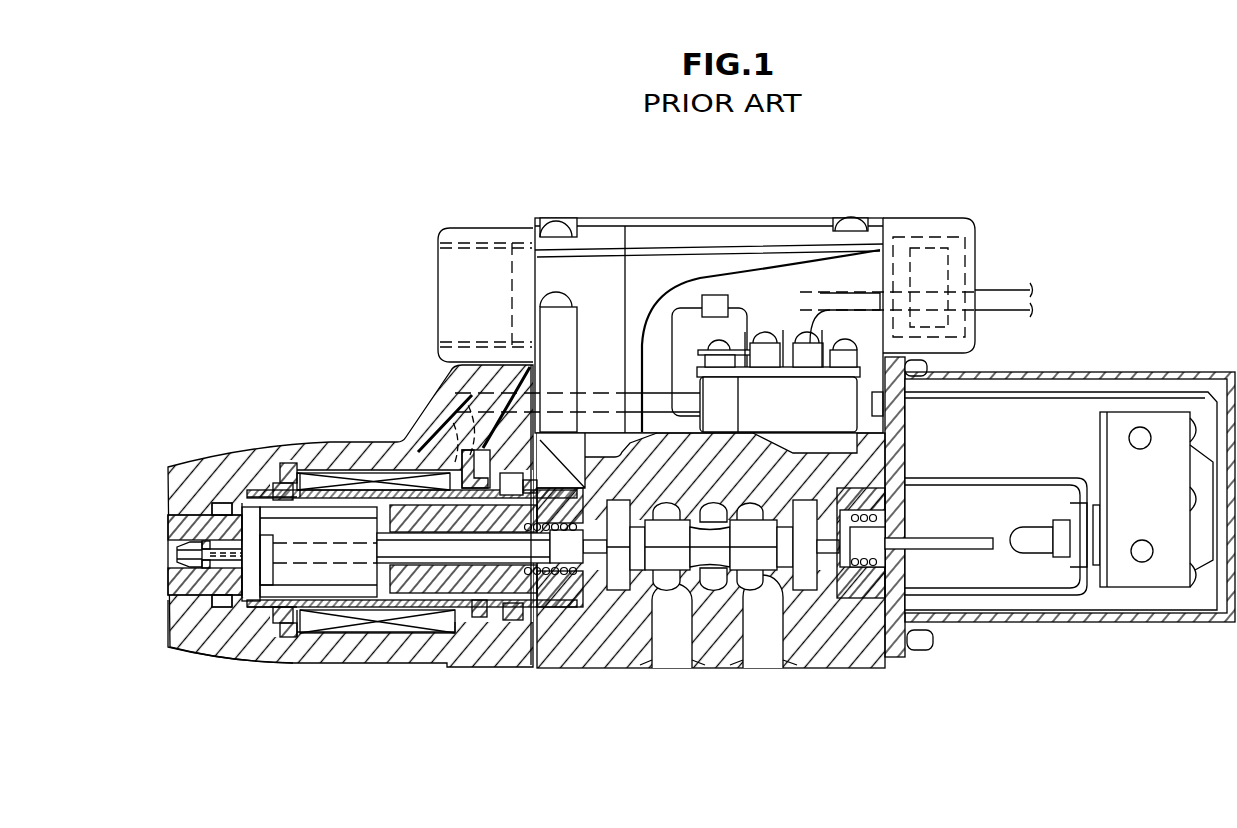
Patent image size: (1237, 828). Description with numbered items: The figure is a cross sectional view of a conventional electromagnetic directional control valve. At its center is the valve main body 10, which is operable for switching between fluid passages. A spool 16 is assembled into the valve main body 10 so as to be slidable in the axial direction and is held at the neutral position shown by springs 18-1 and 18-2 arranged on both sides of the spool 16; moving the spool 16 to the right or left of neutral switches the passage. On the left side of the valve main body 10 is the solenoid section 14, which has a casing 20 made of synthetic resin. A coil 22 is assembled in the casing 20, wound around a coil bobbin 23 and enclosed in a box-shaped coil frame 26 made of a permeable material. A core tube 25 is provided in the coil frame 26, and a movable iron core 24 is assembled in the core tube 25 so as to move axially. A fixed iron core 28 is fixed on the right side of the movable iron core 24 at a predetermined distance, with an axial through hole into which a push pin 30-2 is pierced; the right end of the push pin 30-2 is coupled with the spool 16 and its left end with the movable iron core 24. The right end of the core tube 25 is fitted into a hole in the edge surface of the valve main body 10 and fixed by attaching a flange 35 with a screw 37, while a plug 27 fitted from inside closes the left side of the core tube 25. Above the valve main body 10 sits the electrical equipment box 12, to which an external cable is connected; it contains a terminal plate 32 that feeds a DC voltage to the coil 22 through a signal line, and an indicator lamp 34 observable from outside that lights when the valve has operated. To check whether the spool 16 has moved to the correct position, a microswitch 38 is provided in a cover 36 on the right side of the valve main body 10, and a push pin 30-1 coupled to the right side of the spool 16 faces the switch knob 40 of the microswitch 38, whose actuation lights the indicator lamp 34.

The valve main body 10 is at (613, 680).
The electrical equipment box 12 is at (590, 210).
The solenoid section 14 is at (185, 458).
The spool 16 is at (817, 668).
The spring 18-1 is at (903, 475).
The spring 18-2 is at (440, 455).
The casing 20 is at (180, 630).
The coil 22 is at (330, 478).
The coil bobbin 23 is at (280, 488).
The movable iron core 24 is at (297, 585).
The core tube 25 is at (220, 590).
The coil frame 26 is at (233, 497).
The plug 27 is at (195, 553).
The fixed iron core 28 is at (427, 587).
The push pin 30-1 is at (965, 552).
The push pin 30-2 is at (478, 618).
The terminal plate 32 is at (760, 338).
The indicator lamp 34 is at (712, 295).
The flange 35 is at (552, 608).
The cover 36 is at (1150, 372).
The screw 37 is at (500, 465).
The microswitch 38 is at (1150, 575).
The switch knob 40 is at (1037, 552).